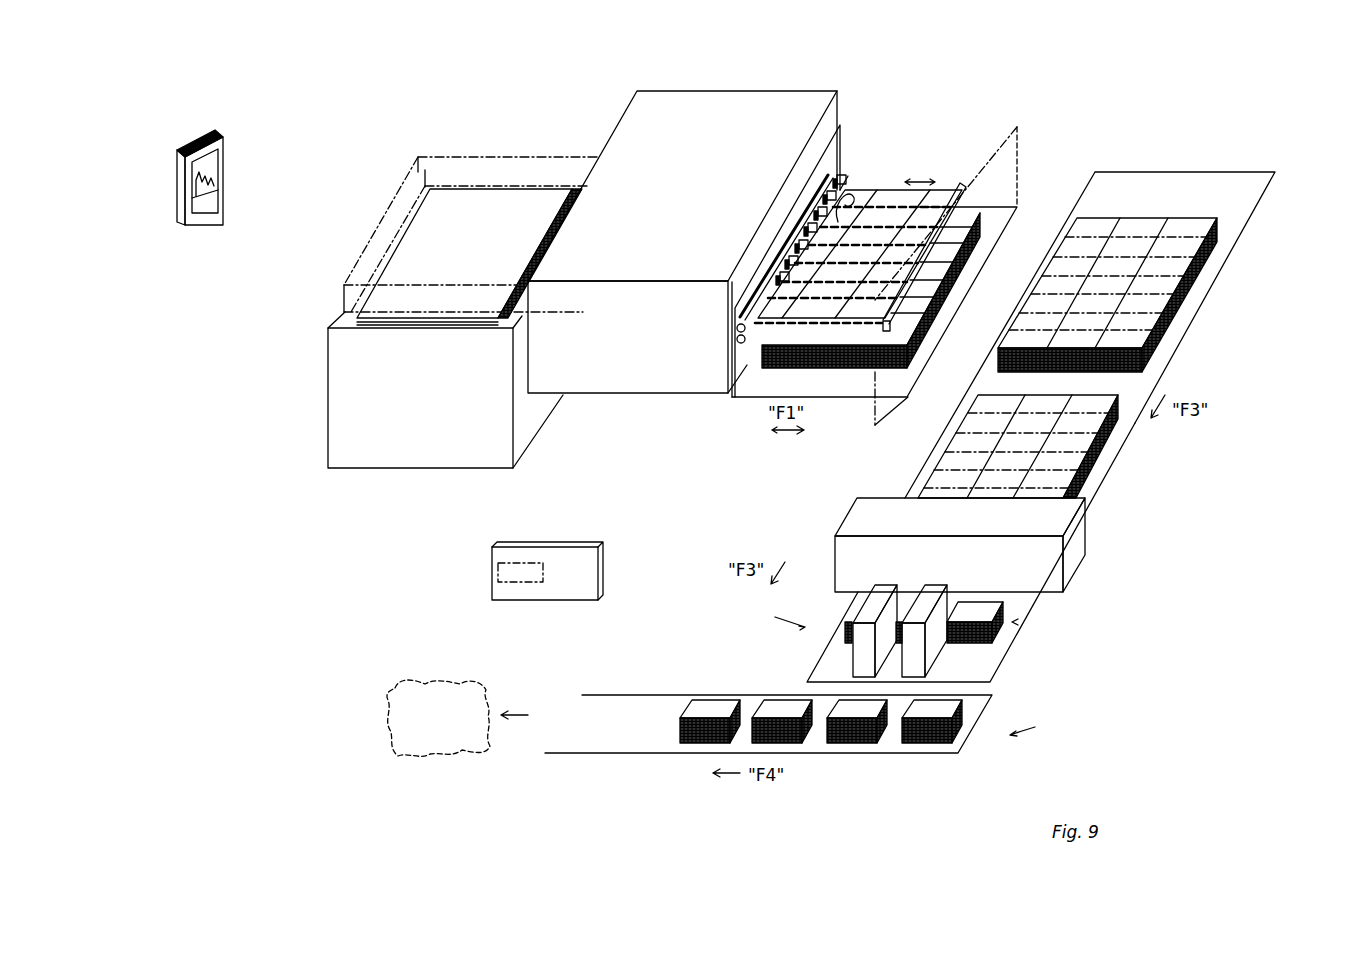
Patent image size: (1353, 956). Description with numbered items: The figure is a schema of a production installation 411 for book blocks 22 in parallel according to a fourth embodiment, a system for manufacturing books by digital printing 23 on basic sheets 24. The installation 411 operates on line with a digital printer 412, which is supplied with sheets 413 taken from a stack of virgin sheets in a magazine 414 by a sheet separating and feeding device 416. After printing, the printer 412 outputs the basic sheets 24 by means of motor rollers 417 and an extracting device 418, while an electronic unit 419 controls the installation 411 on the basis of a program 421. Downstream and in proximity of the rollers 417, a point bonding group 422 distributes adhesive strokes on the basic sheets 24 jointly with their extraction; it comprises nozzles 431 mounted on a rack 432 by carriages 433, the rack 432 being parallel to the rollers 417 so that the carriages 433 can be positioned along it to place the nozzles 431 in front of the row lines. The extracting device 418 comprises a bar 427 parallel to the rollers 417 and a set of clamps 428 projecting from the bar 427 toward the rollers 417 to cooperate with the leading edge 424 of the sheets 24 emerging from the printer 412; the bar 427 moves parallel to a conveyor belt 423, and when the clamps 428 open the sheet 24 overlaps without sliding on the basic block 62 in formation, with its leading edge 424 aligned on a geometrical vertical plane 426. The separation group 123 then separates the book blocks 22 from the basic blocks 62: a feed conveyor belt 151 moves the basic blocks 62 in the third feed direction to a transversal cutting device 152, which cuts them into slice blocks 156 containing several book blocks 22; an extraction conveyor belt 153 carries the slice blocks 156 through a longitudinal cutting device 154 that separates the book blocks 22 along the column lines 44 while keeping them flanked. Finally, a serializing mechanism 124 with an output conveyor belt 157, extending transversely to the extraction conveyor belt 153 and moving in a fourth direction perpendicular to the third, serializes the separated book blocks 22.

The book blocks 22 is at (207, 128).
The digital printing 23 is at (420, 671).
The basic sheets 24 is at (808, 318).
The column lines 44 is at (955, 603).
The basic blocks 62 is at (1214, 218).
The separation group 123 is at (1219, 155).
The serializing mechanism 124 is at (1042, 724).
The feed conveyor belt 151 is at (1229, 198).
The transversal cutting device 152 is at (782, 495).
The extraction conveyor belt 153 is at (987, 670).
The longitudinal cutting device 154 is at (775, 616).
The slice blocks 156 is at (1012, 622).
The output conveyor belt 157 is at (625, 738).
The production installation 411 is at (1158, 110).
The digital printer 412 is at (735, 78).
The sheets 413 is at (402, 247).
The magazine 414 is at (520, 457).
The sheet separating and feeding device 416 is at (412, 157).
The motor rollers 417 is at (737, 338).
The extracting device 418 is at (975, 166).
The electronic unit 419 is at (605, 560).
The program 421 is at (510, 578).
The point bonding group 422 is at (852, 158).
The conveyor belt 423 is at (1008, 218).
The leading edge 424 is at (983, 218).
The geometrical vertical plane 426 is at (1018, 158).
The bar 427 is at (937, 257).
The clamps 428 is at (928, 205).
The nozzles 431 is at (838, 205).
The rack 432 is at (770, 285).
The carriages 433 is at (793, 232).